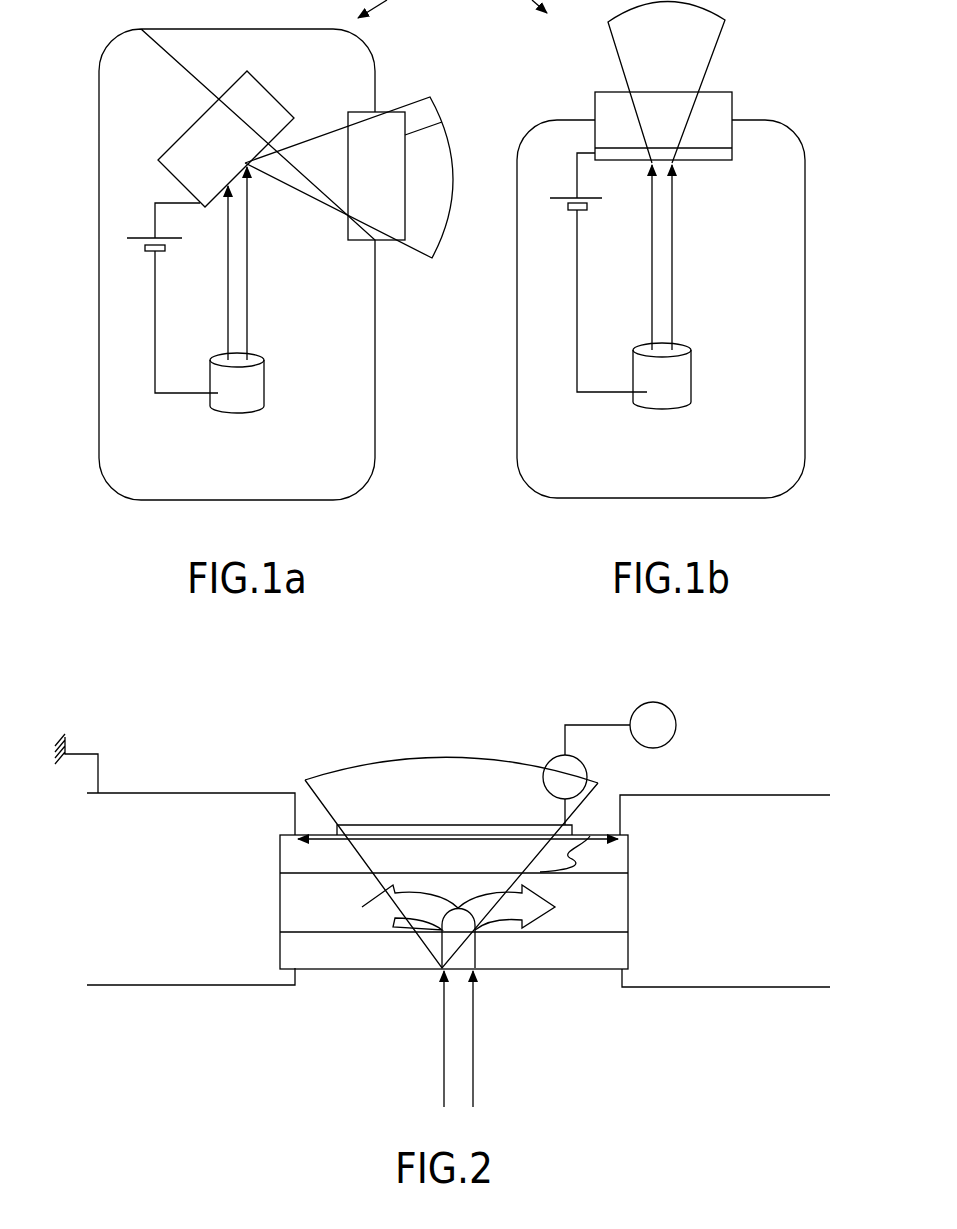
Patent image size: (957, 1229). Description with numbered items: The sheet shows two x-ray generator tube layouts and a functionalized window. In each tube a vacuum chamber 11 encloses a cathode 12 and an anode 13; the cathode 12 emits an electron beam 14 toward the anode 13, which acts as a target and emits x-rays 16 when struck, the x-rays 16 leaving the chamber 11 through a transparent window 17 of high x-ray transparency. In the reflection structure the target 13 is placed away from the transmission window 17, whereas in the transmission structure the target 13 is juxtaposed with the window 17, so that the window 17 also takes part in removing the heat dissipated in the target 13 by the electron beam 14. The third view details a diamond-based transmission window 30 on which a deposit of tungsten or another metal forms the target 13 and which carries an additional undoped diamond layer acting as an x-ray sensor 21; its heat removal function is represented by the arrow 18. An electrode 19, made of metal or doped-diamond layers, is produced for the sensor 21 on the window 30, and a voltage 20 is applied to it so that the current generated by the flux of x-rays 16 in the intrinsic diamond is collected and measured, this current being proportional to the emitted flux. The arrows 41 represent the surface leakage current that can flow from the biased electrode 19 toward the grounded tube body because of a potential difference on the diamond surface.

In FIG. 1a, the vacuum chamber 11 is at (375, 457).
In FIG. 1b, the vacuum chamber 11 is at (805, 465).
In FIG. 1a, the cathode 12 is at (265, 385).
In FIG. 1b, the cathode 12 is at (692, 375).
In FIG. 1a, the anode 13 is at (284, 88).
In FIG. 1b, the anode 13 is at (588, 108).
In FIG. 2, the anode 13 is at (560, 982).
In FIG. 1a, the electron beam 14 is at (245, 282).
In FIG. 1b, the electron beam 14 is at (673, 242).
In FIG. 2, the electron beam 14 is at (475, 1040).
In FIG. 1a, the x-rays 16 is at (313, 198).
In FIG. 1b, the x-rays 16 is at (718, 38).
In FIG. 2, the x-rays 16 is at (440, 757).
In FIG. 1a, the transparent window 17 is at (448, 114).
In FIG. 1b, the transparent window 17 is at (733, 132).
In FIG. 2, the arrow representing heat removal function 18 is at (525, 910).
In FIG. 2, the electrode 19 is at (363, 825).
In FIG. 2, the voltage 20 is at (592, 725).
In FIG. 2, the x-ray sensor 21 is at (323, 825).
In FIG. 2, the diamond-based transmission window 30 is at (638, 815).
In FIG. 2, the arrows representing leakage current 41 is at (350, 873).